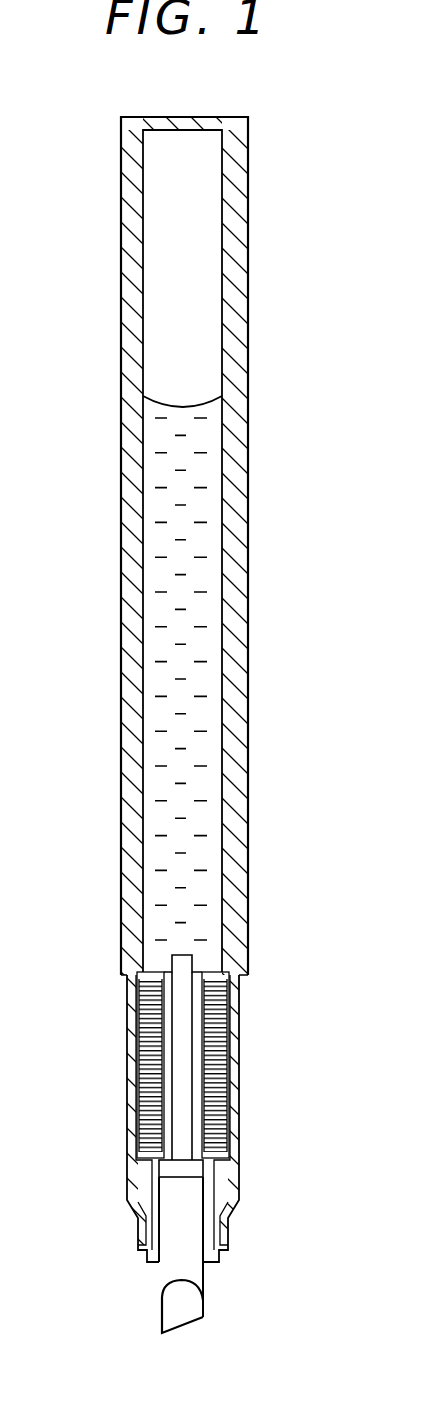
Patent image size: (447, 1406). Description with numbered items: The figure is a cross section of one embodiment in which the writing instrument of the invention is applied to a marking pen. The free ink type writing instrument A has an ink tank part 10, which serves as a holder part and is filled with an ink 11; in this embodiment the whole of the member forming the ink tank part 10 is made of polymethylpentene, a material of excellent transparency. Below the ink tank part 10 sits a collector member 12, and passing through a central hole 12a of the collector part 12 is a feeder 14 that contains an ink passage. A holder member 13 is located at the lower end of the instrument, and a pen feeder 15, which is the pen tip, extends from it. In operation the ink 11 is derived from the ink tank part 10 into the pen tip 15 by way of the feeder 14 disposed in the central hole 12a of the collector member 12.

The free ink type writing instrument A is at (260, 303).
The ink tank part 10 is at (236, 524).
The ink 11 is at (205, 687).
The collector member 12 is at (148, 1024).
The central hole 12a is at (228, 1097).
The holder member 13 is at (228, 1183).
The feeder 14 is at (187, 1043).
The pen feeder 15 is at (161, 1292).